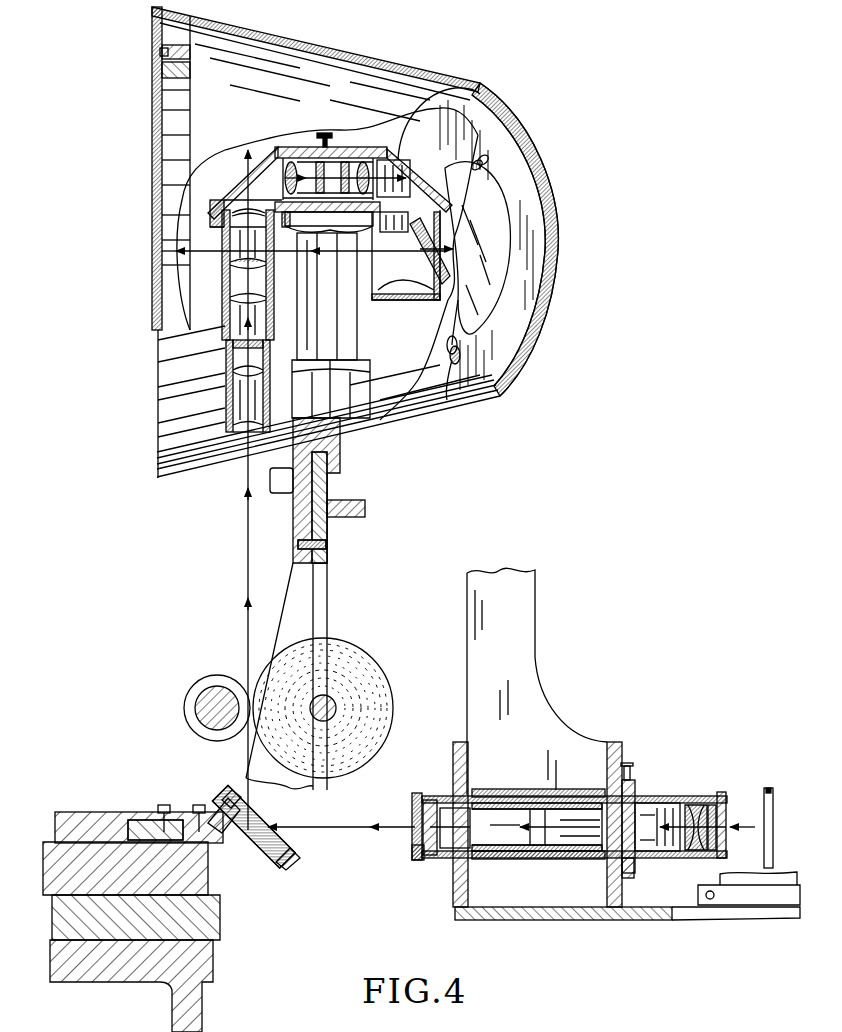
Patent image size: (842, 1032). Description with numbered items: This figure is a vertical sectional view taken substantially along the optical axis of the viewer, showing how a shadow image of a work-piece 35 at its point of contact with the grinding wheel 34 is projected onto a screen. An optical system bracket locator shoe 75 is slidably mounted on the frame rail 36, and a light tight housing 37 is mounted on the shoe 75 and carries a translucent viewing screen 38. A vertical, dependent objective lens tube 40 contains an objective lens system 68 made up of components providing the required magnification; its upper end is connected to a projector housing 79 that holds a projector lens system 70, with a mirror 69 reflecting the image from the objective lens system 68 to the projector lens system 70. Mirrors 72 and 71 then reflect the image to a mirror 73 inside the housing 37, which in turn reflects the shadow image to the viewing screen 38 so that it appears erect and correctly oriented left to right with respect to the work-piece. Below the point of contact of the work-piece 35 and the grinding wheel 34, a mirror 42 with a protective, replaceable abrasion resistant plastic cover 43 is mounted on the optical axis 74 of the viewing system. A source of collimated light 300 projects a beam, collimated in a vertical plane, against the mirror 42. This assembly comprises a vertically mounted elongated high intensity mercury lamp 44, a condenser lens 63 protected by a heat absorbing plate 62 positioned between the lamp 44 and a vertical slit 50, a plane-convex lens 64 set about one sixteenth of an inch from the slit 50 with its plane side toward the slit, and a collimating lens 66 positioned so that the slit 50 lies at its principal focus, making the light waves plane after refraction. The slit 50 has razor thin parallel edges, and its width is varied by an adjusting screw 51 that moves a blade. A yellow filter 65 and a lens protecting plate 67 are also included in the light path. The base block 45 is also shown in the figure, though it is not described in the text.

The grinding wheel 34 is at (365, 660).
The work-piece 35 is at (212, 686).
The frame rail 36 is at (327, 492).
The light tight housing 37 is at (340, 52).
The viewing screen 38 is at (152, 205).
The objective lens tube 40 is at (290, 318).
The mirror 42 is at (283, 852).
The protective plastic cover 43 is at (262, 822).
The mercury lamp 44 is at (772, 805).
The base block 45 is at (133, 918).
The vertical slit 50 is at (626, 763).
The adjusting screw 51 is at (635, 762).
The heat absorbing plate 62 is at (720, 805).
The condenser lens 63 is at (697, 806).
The plane-convex lens 64 is at (640, 812).
The yellow filter 65 is at (480, 812).
The collimating lens 66 is at (433, 800).
The lens protecting plate 67 is at (415, 855).
The objective lens system 68 is at (222, 415).
The mirror 69 is at (247, 145).
The projector lens system 70 is at (328, 145).
The mirror 71 is at (412, 270).
The mirror 72 is at (469, 166).
The mirror 73 is at (488, 220).
The optical axis 74 is at (246, 526).
The optical system bracket locator shoe 75 is at (340, 448).
The projector housing 79 is at (300, 147).
The source of collimated light 300 is at (660, 718).